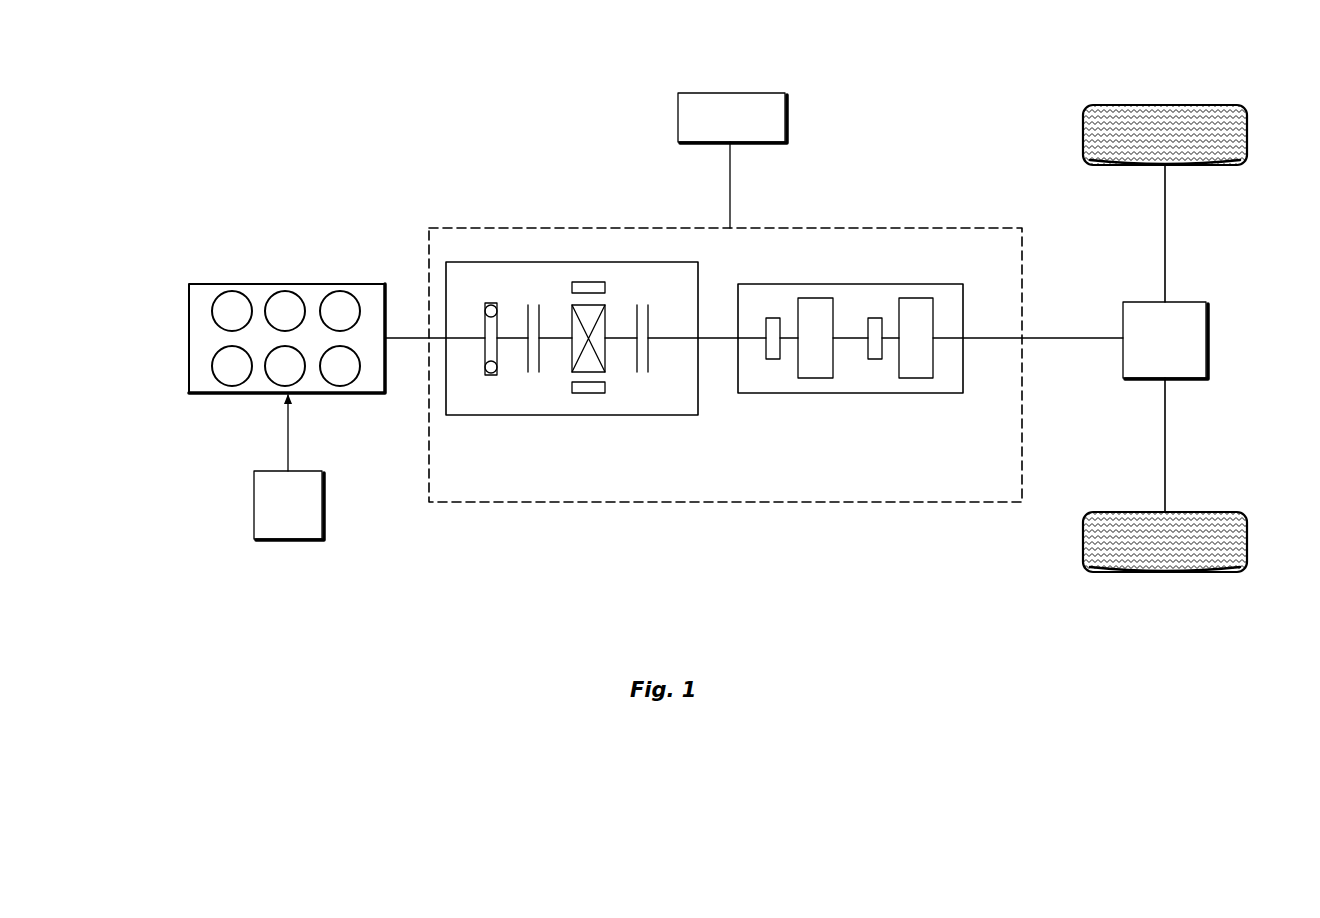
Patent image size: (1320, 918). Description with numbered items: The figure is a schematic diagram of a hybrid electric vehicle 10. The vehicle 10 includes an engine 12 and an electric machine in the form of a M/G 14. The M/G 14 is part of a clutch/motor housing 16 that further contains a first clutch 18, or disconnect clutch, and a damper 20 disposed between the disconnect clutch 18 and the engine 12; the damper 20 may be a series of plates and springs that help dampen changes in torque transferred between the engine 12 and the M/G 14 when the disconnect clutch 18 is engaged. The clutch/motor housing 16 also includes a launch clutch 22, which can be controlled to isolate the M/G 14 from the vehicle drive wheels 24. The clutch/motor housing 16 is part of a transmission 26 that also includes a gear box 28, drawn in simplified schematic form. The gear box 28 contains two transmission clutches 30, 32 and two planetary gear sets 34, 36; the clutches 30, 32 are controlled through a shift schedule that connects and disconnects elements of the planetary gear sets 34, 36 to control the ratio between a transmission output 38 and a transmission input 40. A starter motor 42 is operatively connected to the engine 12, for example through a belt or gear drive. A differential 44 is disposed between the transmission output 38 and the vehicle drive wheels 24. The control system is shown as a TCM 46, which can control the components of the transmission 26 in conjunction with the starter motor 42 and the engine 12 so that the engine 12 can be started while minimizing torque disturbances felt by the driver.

The vehicle 10 is at (430, 93).
The engine 12 is at (224, 282).
The M/G 14 is at (591, 395).
The clutch/motor housing 16 is at (545, 262).
The first clutch 18 is at (528, 355).
The damper 20 is at (485, 352).
The launch clutch 22 is at (648, 355).
The vehicle drive wheels 24 is at (1203, 105).
The transmission 26 is at (650, 502).
The gear box 28 is at (940, 284).
The transmission clutch 30 is at (773, 359).
The transmission clutch 32 is at (875, 359).
The planetary gear set 34 is at (817, 298).
The planetary gear set 36 is at (918, 298).
The transmission output 38 is at (1062, 340).
The transmission input 40 is at (714, 338).
The starter motor 42 is at (300, 541).
The differential 44 is at (1208, 330).
The TCM 46 is at (790, 110).